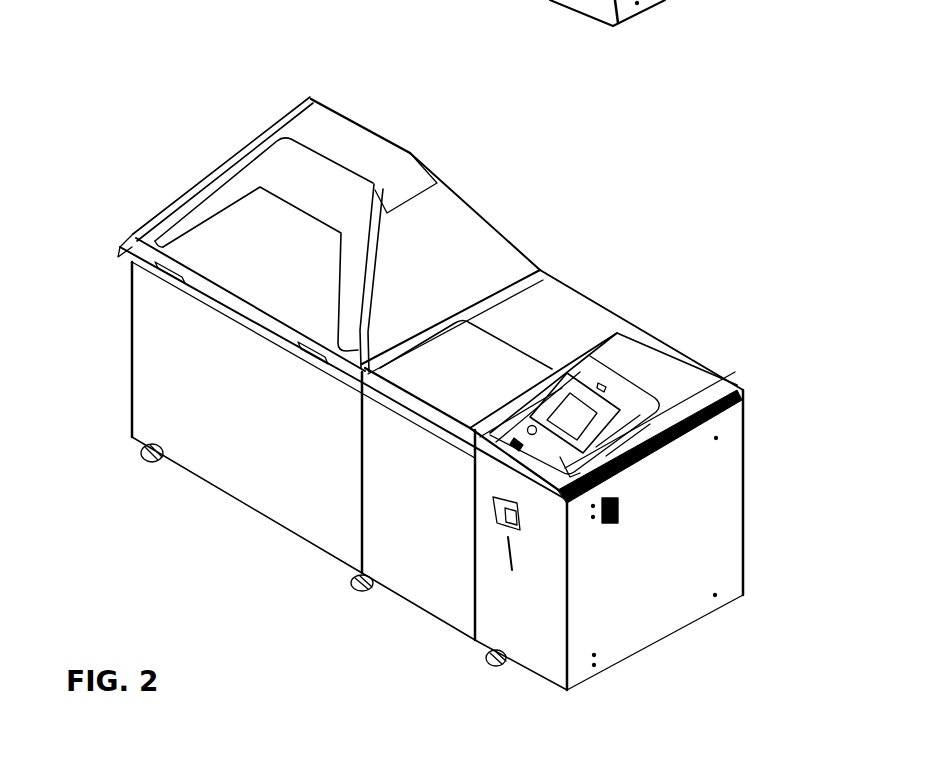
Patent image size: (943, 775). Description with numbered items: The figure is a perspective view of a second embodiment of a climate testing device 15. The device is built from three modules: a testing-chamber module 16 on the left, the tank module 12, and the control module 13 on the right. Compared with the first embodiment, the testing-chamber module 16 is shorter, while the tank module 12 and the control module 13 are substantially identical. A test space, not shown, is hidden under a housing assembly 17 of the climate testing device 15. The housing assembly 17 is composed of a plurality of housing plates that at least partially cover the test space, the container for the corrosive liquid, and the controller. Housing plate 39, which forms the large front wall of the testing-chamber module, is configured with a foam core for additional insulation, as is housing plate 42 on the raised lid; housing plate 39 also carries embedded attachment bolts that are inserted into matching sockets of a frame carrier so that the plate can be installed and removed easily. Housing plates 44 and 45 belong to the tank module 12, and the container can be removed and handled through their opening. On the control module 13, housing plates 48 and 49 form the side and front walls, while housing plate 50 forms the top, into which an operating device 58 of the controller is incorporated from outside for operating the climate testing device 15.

The tank module 12 is at (607, 308).
The control module 13 is at (705, 356).
The climate testing device 15 is at (648, 170).
The testing-chamber module 16 is at (410, 153).
The housing assembly 17 is at (182, 170).
The housing plate 39 is at (267, 470).
The housing plate 42 is at (337, 137).
The housing plate 44 is at (437, 543).
The housing plate 45 is at (550, 305).
The housing plate 48 is at (695, 532).
The housing plate 49 is at (537, 617).
The housing plate 50 is at (700, 397).
The operating device 58 is at (607, 372).